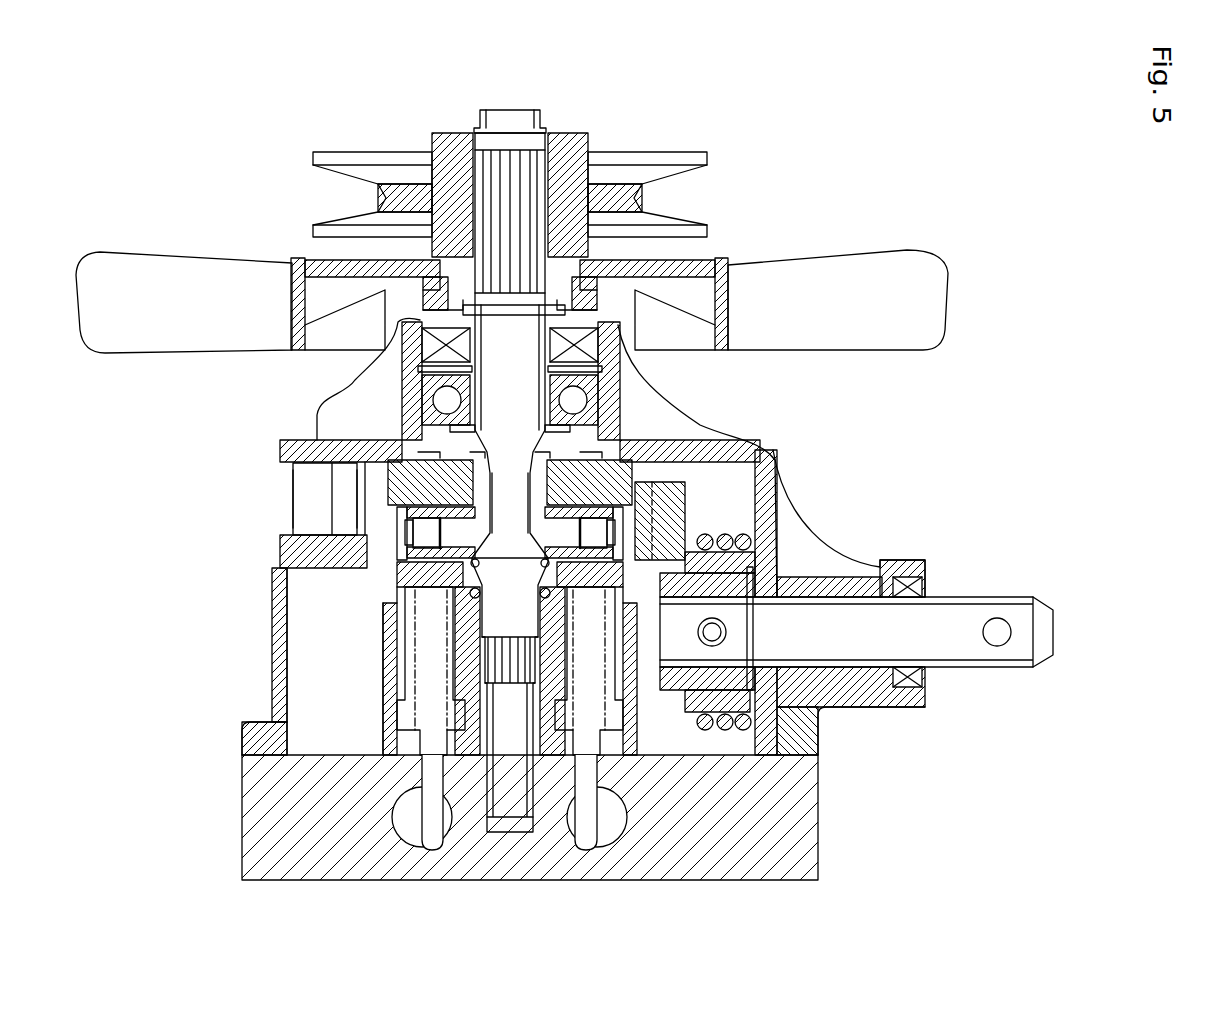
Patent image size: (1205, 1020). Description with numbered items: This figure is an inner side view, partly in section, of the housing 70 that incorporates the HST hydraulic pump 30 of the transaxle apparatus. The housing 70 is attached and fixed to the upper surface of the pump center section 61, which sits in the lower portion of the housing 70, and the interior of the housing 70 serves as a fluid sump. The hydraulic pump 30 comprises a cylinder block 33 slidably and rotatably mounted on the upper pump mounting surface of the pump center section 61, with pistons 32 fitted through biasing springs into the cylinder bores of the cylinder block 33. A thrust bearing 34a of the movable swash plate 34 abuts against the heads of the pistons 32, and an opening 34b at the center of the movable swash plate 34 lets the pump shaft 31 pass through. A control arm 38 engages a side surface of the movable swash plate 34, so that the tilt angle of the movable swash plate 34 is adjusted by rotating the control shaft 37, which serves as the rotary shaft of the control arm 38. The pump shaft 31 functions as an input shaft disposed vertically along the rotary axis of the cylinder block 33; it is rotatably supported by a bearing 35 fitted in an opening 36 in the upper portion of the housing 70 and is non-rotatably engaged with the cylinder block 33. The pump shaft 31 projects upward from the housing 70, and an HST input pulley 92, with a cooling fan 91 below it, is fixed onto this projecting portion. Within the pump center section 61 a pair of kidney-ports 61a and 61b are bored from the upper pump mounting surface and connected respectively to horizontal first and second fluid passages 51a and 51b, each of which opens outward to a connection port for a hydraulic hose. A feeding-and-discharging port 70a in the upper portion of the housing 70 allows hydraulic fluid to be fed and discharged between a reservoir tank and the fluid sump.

The hydraulic pump 30 is at (340, 660).
The pump shaft 31 is at (545, 126).
The pistons 32 is at (390, 595).
The cylinder block 33 is at (380, 690).
The movable swash plate 34 is at (633, 467).
The thrust bearing 34a is at (590, 520).
The opening 34b is at (478, 485).
The bearing 35 is at (580, 395).
The opening 36 is at (600, 312).
The control shaft 37 is at (985, 597).
The control arm 38 is at (692, 512).
The first fluid passage 51a is at (452, 822).
The second fluid passage 51b is at (630, 822).
The pump center section 61 is at (820, 805).
The kidney-port 61a is at (420, 776).
The kidney-port 61b is at (600, 776).
The housing 70 is at (794, 458).
The feeding-and-discharging port 70a is at (291, 531).
The cooling fan 91 is at (943, 338).
The HST input pulley 92 is at (653, 190).